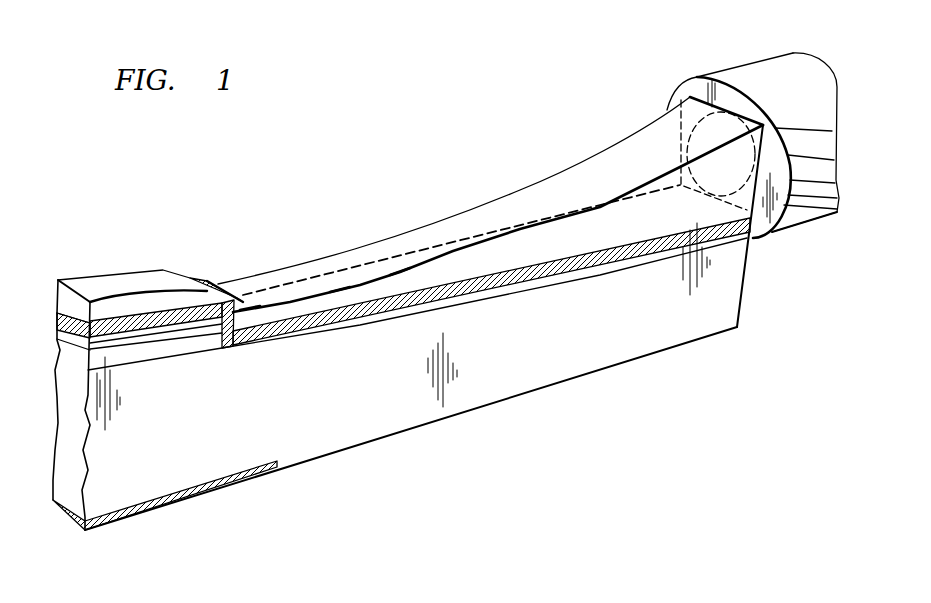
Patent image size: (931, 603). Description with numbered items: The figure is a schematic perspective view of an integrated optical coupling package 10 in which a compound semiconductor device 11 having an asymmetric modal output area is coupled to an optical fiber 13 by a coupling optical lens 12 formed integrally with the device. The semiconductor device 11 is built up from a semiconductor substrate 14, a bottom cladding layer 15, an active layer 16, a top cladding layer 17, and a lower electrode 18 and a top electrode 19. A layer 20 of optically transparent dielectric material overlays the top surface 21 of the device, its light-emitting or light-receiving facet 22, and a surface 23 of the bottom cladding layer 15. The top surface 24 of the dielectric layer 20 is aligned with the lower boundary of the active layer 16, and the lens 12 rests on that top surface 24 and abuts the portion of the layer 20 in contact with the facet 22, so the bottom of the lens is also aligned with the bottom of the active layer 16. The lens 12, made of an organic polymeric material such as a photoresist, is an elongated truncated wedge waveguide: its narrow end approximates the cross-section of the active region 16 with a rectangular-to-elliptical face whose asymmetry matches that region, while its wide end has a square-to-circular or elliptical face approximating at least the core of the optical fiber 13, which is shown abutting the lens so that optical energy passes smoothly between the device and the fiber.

The integrated optical coupling package 10 is at (334, 157).
The compound semiconductor device 11 is at (125, 238).
The coupling optical lens 12 is at (457, 228).
The optical fiber 13 is at (747, 67).
The semiconductor substrate 14 is at (348, 433).
The bottom cladding layer 15 is at (128, 380).
The active layer 16 is at (62, 347).
The top cladding layer 17 is at (143, 333).
The lower electrode 18 is at (135, 518).
The top electrode 19 is at (58, 307).
The dielectric layer 20 is at (200, 278).
The top surface 21 is at (172, 310).
The light-emitting facet 22 is at (240, 317).
The surface of bottom cladding layer 23 is at (413, 293).
The top surface of dielectric layer 24 is at (353, 303).